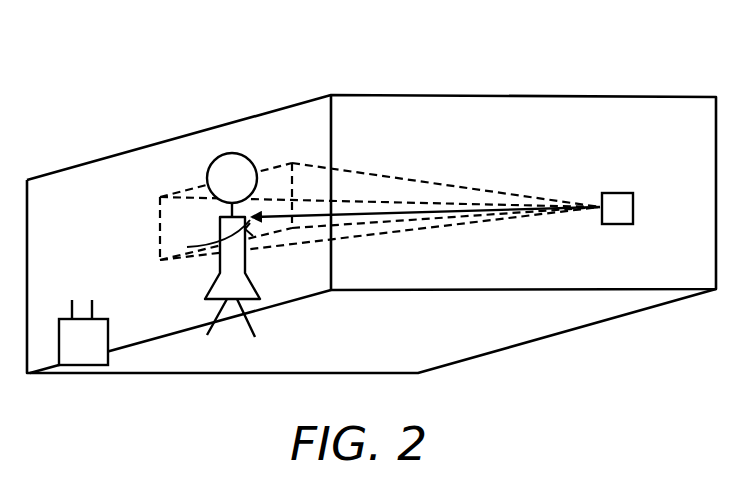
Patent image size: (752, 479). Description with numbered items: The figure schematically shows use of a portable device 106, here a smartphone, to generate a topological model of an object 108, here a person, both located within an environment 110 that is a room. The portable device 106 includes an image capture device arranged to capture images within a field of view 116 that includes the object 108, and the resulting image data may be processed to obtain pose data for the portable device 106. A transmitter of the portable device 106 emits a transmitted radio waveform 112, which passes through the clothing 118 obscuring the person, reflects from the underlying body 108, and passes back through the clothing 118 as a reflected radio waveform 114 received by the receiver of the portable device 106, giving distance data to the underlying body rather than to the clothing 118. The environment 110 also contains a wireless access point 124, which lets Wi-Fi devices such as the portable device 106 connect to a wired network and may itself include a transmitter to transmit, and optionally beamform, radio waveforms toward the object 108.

The environment 110 is at (160, 66).
The portable device 106 is at (617, 192).
The object 108 is at (228, 155).
The transmitted radio waveform 112 is at (219, 225).
The reflected radio waveform 114 is at (596, 200).
The field of view 116 is at (343, 172).
The clothing 118 is at (250, 280).
The wireless access point 124 is at (104, 318).